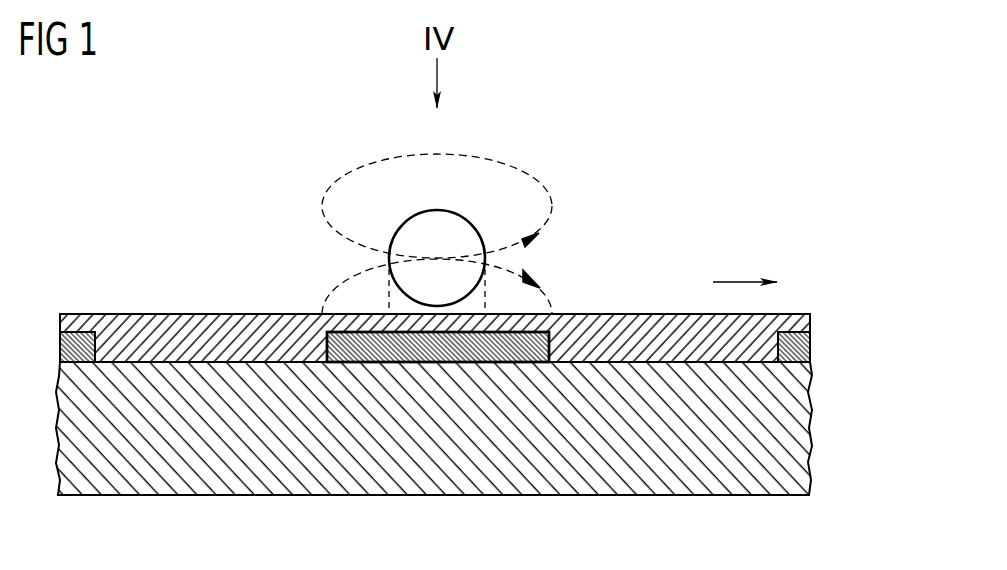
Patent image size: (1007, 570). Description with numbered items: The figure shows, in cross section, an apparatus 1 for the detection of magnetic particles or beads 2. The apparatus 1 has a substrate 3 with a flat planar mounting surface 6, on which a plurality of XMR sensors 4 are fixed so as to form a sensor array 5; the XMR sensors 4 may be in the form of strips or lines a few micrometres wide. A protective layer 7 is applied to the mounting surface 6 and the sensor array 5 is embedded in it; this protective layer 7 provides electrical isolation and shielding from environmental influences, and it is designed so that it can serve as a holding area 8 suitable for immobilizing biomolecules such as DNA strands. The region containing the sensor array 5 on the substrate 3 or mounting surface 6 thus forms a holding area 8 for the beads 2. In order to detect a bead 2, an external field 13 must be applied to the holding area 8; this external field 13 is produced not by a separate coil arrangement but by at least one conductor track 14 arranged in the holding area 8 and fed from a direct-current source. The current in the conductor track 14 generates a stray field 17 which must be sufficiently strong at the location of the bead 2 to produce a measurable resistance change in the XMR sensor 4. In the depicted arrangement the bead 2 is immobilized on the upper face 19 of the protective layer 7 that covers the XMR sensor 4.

The apparatus 1 is at (676, 240).
The bead 2 is at (463, 231).
The substrate 3 is at (540, 497).
The XMR sensor 4 is at (60, 347).
The sensor array 5 is at (100, 345).
The mounting surface 6 is at (620, 360).
The protective layer 7 is at (673, 332).
The holding area 8 is at (285, 268).
The external field 13 is at (741, 281).
The conductor track 14 is at (80, 333).
The stray field 17 is at (507, 167).
The upper face of the protective layer 19 is at (371, 313).